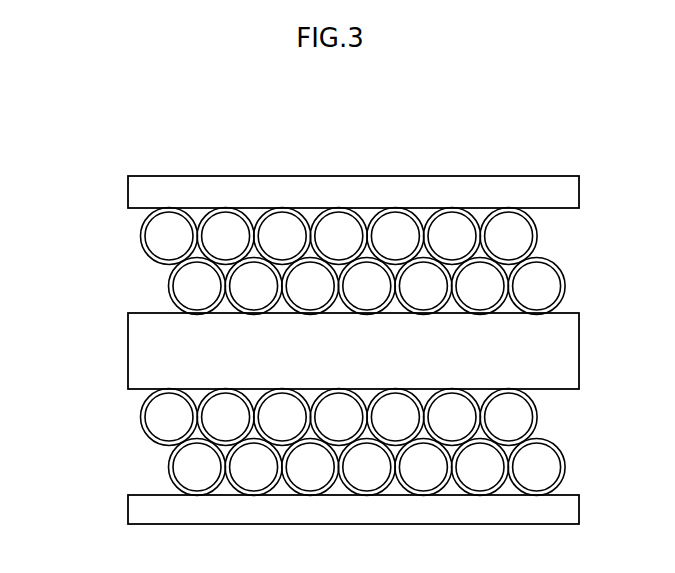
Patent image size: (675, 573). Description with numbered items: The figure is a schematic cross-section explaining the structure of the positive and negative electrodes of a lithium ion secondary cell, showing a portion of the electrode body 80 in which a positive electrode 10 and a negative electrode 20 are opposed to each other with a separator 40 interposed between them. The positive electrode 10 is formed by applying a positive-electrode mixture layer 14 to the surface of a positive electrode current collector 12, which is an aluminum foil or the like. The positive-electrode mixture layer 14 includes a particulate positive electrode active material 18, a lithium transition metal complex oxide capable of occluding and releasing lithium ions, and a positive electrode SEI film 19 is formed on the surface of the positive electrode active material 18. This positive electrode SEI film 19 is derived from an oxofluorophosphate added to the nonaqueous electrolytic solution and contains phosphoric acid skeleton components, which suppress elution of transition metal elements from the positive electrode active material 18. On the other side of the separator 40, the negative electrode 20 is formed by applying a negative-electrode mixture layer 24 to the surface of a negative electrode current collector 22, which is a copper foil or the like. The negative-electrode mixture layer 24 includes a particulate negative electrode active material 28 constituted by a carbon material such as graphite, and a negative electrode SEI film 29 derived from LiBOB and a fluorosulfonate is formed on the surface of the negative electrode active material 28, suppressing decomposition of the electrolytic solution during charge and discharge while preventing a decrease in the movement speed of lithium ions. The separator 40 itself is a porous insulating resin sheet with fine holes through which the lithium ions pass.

The electrode body 80 is at (617, 129).
The positive electrode 10 is at (62, 180).
The positive electrode current collector 12 is at (130, 193).
The positive-electrode mixture layer 14 is at (118, 218).
The positive electrode SEI film 19 is at (538, 232).
The positive electrode active material 18 is at (543, 278).
The separator 40 is at (137, 350).
The negative electrode 20 is at (62, 427).
The negative-electrode mixture layer 24 is at (118, 398).
The negative electrode SEI film 29 is at (538, 408).
The negative electrode active material 28 is at (543, 455).
The negative electrode current collector 22 is at (130, 505).